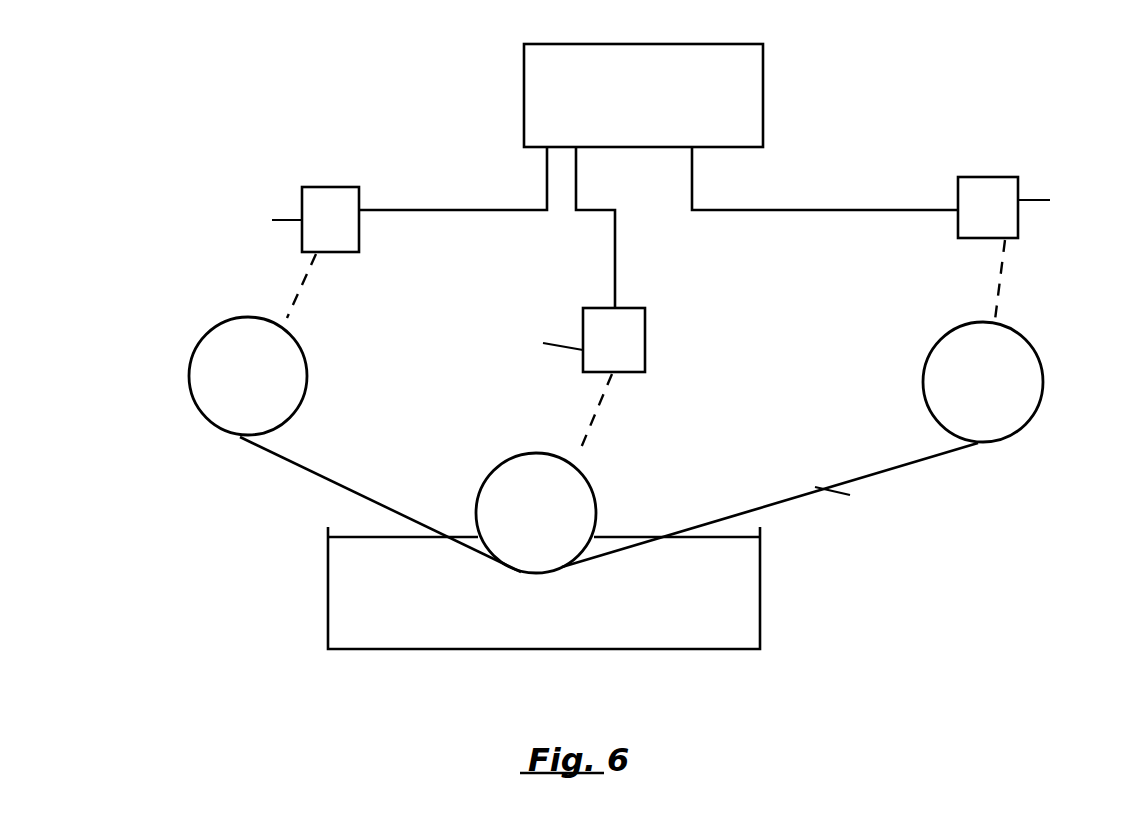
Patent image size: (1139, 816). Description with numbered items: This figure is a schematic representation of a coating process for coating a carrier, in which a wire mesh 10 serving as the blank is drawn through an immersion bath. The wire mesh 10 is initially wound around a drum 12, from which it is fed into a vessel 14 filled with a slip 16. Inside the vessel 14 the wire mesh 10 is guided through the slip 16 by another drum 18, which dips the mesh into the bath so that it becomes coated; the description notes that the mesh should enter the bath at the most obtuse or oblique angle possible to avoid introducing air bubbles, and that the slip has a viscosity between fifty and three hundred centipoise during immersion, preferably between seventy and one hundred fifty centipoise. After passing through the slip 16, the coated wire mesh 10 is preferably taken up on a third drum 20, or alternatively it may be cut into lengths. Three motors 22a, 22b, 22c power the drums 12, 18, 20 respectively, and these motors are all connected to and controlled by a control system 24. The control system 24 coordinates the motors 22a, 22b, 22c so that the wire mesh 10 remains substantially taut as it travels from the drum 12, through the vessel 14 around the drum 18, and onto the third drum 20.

The wire mesh 10 is at (762, 500).
The drum 12 is at (1042, 383).
The vessel 14 is at (692, 646).
The slip 16 is at (552, 627).
The drum 18 is at (483, 483).
The third drum 20 is at (190, 372).
The motor 22a is at (958, 231).
The motor 22b is at (645, 352).
The motor 22c is at (359, 230).
The control system 24 is at (763, 98).